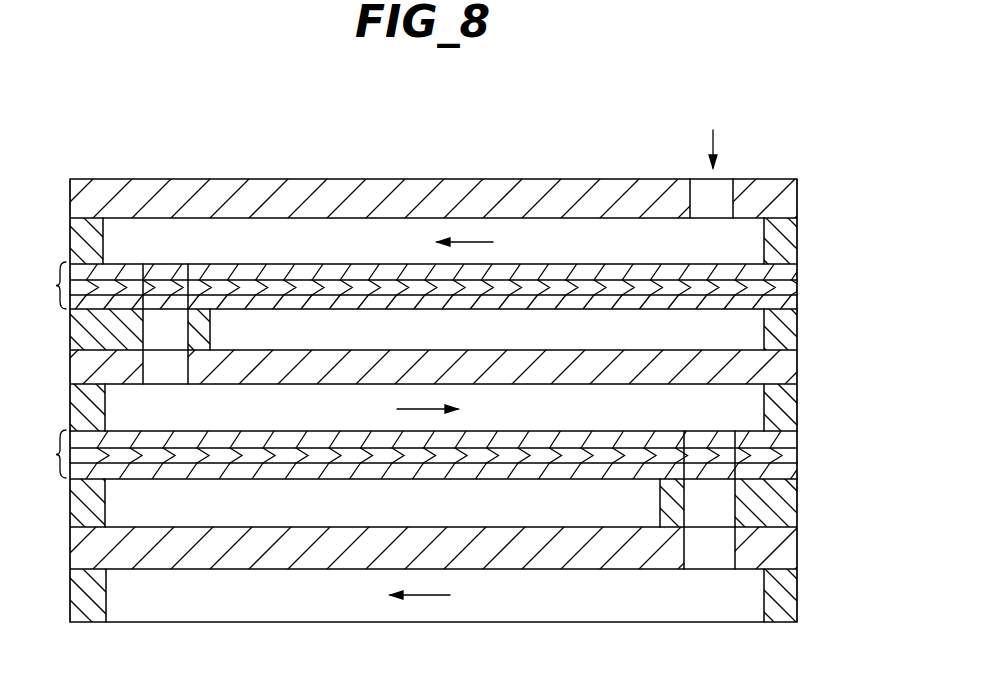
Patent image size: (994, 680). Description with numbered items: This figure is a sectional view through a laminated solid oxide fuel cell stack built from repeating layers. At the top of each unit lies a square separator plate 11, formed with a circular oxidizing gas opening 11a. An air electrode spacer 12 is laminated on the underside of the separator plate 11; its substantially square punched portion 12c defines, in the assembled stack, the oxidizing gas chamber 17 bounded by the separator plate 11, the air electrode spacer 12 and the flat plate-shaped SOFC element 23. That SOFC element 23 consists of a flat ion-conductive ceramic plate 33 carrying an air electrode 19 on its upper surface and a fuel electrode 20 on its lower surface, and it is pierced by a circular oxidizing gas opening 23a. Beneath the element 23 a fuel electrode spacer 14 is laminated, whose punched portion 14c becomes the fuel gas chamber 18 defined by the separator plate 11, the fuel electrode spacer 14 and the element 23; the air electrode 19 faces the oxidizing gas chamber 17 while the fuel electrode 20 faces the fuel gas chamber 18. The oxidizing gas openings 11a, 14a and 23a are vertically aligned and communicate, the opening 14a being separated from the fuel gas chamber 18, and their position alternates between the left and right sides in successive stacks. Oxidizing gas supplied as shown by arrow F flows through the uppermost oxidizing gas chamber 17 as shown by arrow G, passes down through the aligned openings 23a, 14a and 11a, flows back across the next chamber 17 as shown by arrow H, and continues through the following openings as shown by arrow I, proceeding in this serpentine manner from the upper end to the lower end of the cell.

The separator plate 11 is at (563, 197).
The oxidizing gas opening 11a is at (696, 182).
The air electrode spacer 12 is at (797, 227).
The punched portion 12c is at (103, 243).
The fuel electrode spacer 14 is at (797, 325).
The oxidizing gas opening 14a is at (75, 333).
The punched portion 14c is at (207, 342).
The oxidizing gas chamber 17 is at (368, 256).
The fuel gas chamber 18 is at (532, 341).
The air electrode 19 is at (797, 263).
The fuel electrode 20 is at (797, 300).
The flat plate-shaped SOFC element 23 is at (40, 370).
The oxidizing gas opening 23a is at (161, 284).
The ion-conductive ceramic plate 33 is at (797, 288).
The arrow F is at (714, 142).
The arrow G is at (468, 242).
The arrow H is at (423, 405).
The arrow I is at (425, 595).